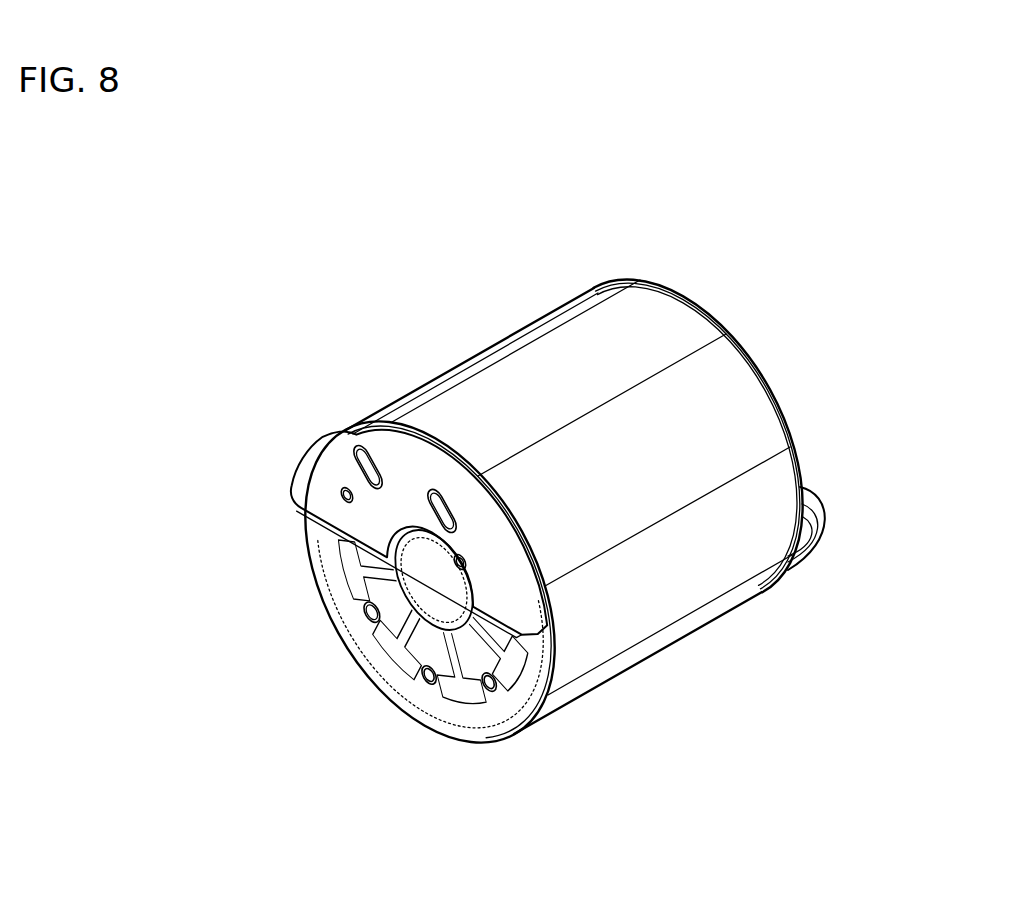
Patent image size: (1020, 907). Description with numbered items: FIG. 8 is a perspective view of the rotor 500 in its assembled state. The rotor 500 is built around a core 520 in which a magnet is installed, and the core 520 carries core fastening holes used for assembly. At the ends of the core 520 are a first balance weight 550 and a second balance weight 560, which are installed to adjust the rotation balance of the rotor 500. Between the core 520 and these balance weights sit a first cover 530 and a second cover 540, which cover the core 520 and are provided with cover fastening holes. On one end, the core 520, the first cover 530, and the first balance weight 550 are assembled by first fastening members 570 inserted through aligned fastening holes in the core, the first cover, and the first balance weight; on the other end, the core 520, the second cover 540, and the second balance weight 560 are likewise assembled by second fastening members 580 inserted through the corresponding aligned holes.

The rotor 500 is at (187, 304).
The core 520 is at (452, 354).
The first cover 530 is at (295, 566).
The second cover 540 is at (722, 305).
The first balance weight 550 is at (280, 448).
The second balance weight 560 is at (830, 560).
The first fastening member 570 is at (340, 470).
The second fastening member 580 is at (340, 633).